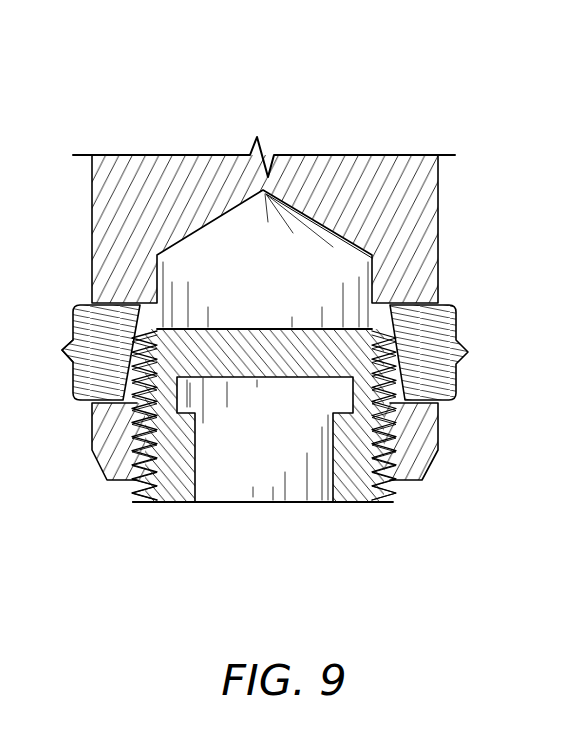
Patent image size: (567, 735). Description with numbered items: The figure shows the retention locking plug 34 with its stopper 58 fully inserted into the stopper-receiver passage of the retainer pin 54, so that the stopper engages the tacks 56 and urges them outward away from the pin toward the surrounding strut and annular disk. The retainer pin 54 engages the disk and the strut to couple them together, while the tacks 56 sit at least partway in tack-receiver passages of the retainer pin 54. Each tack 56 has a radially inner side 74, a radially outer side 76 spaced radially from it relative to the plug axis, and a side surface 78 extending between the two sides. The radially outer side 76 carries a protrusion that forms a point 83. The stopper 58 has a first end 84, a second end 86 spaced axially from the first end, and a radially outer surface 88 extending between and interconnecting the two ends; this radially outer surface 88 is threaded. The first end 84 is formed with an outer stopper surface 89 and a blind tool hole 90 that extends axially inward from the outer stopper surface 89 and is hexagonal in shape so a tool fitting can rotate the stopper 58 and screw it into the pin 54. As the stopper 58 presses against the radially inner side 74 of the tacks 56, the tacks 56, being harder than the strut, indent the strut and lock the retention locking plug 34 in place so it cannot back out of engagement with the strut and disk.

The retention locking plug 34 is at (79, 87).
The retainer pin 54 is at (0, 212).
The tacks 56 is at (50, 320).
The stopper 58 is at (141, 512).
The radially inner side 74 is at (158, 340).
The radially outer side 76 is at (60, 392).
The side surface 78 is at (114, 288).
The point 83 is at (62, 350).
The first end 84 is at (361, 516).
The second end 86 is at (300, 318).
The radially outer surface 88 is at (410, 449).
The outer stopper surface 89 is at (178, 502).
The blind tool hole 90 is at (269, 500).